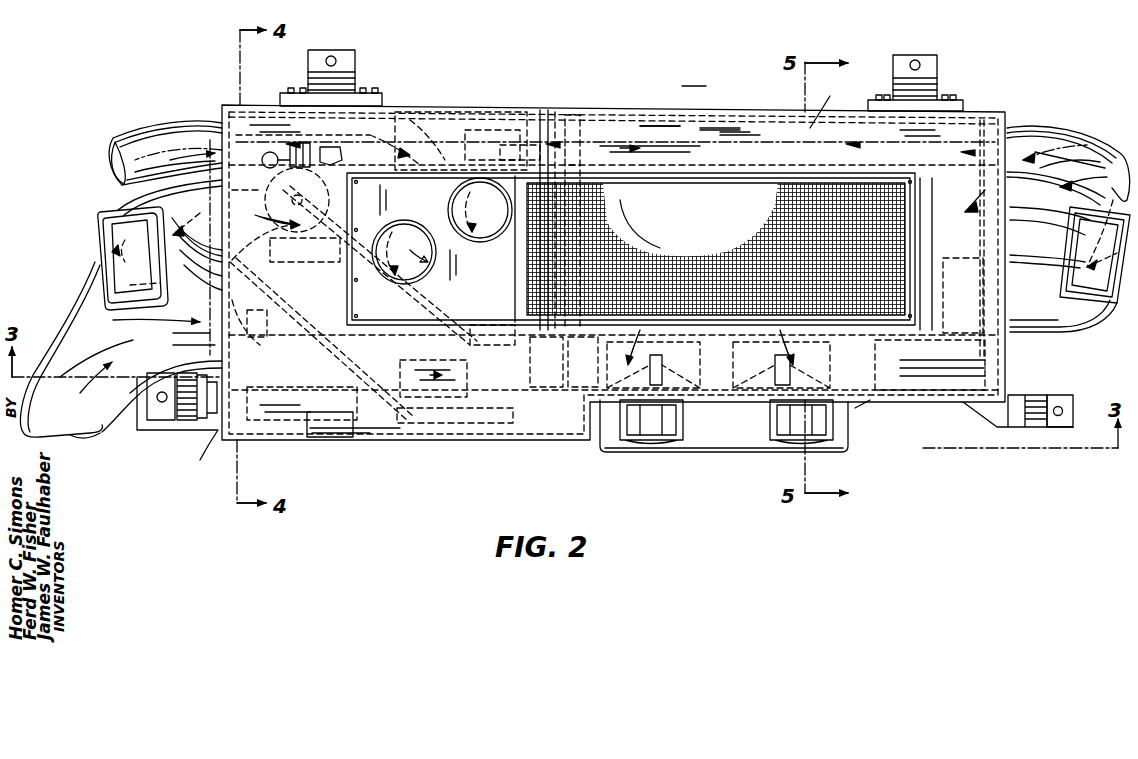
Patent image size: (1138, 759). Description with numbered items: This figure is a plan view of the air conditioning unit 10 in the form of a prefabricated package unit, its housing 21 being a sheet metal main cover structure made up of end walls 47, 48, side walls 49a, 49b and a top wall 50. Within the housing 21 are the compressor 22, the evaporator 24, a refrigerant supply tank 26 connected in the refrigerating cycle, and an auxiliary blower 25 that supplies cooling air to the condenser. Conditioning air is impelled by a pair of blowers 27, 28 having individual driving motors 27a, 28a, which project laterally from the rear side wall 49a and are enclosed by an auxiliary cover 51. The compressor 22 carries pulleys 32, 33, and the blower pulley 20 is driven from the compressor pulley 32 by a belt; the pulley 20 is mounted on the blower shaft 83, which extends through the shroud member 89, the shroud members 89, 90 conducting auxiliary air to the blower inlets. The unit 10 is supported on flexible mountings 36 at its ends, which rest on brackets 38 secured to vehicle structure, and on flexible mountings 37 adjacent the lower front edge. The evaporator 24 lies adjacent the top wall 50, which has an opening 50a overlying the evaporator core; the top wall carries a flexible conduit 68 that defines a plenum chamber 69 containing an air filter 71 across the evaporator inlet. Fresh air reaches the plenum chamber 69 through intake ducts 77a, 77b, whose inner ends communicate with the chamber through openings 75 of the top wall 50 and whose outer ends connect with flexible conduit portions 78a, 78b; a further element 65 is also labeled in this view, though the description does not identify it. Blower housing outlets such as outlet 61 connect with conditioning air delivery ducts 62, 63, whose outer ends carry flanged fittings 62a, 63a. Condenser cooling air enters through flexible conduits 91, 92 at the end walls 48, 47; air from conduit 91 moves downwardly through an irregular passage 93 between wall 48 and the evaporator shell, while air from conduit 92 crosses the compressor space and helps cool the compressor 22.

The air conditioning unit 10 is at (708, 112).
The blower pulley 20 is at (435, 448).
The housing 21 is at (728, 130).
The compressor 22 is at (266, 348).
The evaporator 24 is at (818, 128).
The blower 25 is at (631, 249).
The refrigerant supply tank 26 is at (272, 195).
The blower 27 is at (686, 396).
The driving motor 27a is at (640, 443).
The blower 28 is at (765, 396).
The driving motor 28a is at (838, 438).
The compressor pulley 32 is at (322, 432).
The compressor pulley 33 is at (258, 432).
The flexible mounting 36 is at (190, 420).
The flexible mounting 37 is at (350, 84).
The bracket 38 is at (155, 420).
The end wall 47 is at (201, 458).
The end wall 48 is at (1007, 367).
The rear side wall 49a is at (520, 410).
The side wall 49b is at (580, 112).
The top wall 50 is at (616, 124).
The top wall opening 50a is at (730, 182).
The auxiliary cover 51 is at (700, 450).
The delivery outlet 61 is at (915, 395).
The conditioning air delivery duct 62 is at (318, 342).
The fitting 62a is at (115, 212).
The conditioning air delivery duct 63 is at (960, 262).
The fitting 63a is at (1040, 330).
The valve 65 is at (498, 150).
The flexible conduit 68 is at (618, 176).
The plenum chamber 69 is at (522, 170).
The air filter 71 is at (810, 195).
The opening 75 is at (462, 245).
The intake duct 77a is at (661, 219).
The intake duct 77b is at (395, 120).
The flexible conduit portion 78a is at (1042, 126).
The flexible conduit portion 78b is at (180, 108).
The shaft 83 is at (470, 132).
The shroud member 89 is at (540, 400).
The shroud member 90 is at (328, 144).
The flexible conduit 91 is at (1065, 147).
The flexible conduit 92 is at (88, 302).
The irregular passage 93 is at (943, 180).